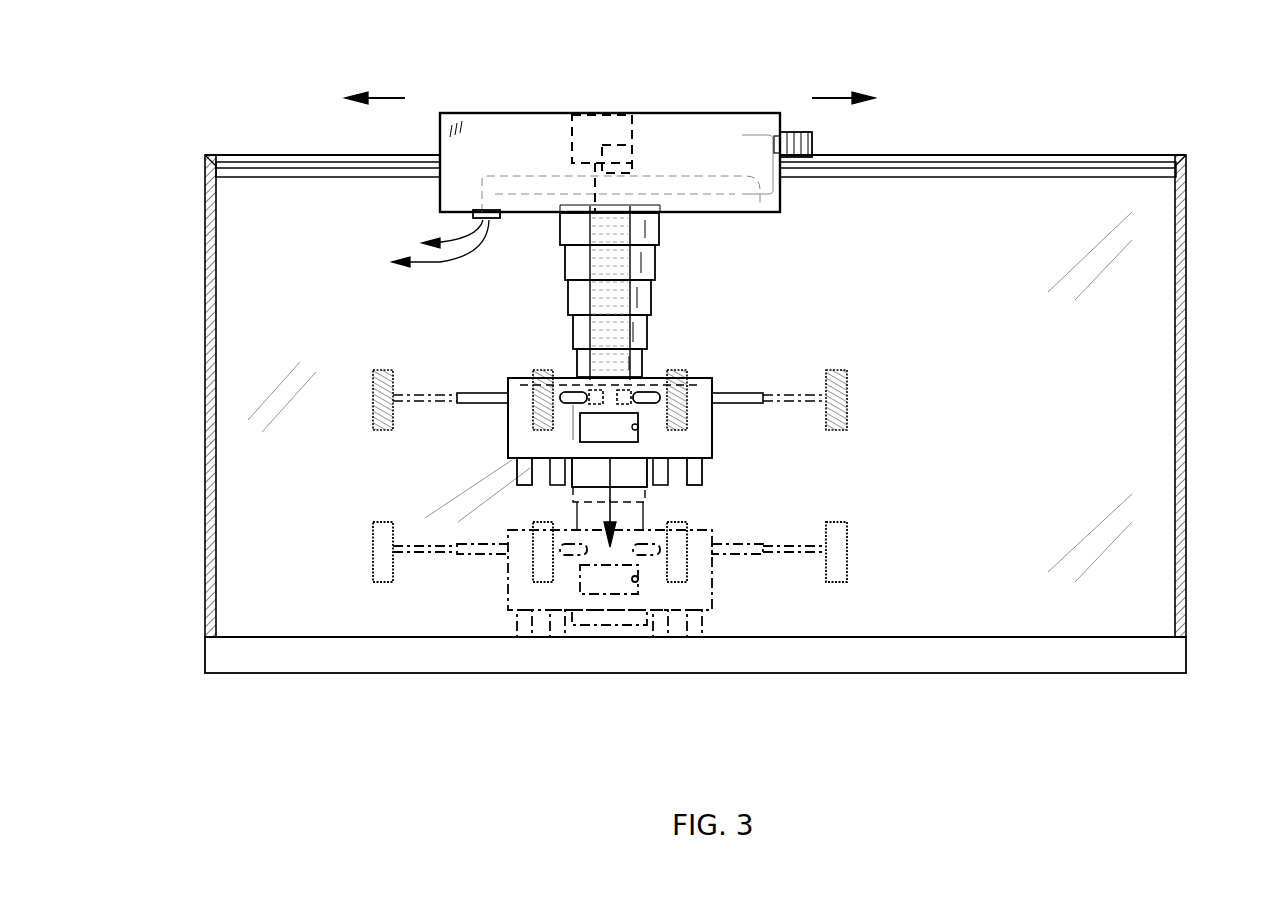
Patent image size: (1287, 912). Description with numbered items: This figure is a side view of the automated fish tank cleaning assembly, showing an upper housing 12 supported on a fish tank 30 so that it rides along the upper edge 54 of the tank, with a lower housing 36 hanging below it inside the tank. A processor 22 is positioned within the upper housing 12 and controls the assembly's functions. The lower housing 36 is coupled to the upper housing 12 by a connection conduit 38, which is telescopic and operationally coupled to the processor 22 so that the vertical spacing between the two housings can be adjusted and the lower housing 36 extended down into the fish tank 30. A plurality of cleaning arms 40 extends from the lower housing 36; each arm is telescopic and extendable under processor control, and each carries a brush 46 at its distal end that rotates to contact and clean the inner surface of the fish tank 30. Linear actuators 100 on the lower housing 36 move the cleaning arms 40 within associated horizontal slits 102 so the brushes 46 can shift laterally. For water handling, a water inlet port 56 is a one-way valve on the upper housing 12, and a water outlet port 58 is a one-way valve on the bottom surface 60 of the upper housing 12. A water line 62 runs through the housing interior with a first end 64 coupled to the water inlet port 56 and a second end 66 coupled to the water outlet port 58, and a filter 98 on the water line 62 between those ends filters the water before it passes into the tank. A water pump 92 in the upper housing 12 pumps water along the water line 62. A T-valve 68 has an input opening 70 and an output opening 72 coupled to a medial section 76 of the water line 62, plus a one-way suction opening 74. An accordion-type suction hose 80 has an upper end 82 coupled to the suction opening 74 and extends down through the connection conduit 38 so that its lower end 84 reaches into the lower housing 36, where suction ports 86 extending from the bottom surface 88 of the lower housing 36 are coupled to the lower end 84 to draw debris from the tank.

The upper housing 12 is at (455, 117).
The processor 22 is at (598, 112).
The fish tank 30 is at (1162, 283).
The lower housing 36 is at (704, 430).
The connection conduit 38 is at (654, 260).
The cleaning arms 40 is at (463, 388).
The brushes 46 is at (382, 368).
The upper edge 54 is at (987, 160).
The water inlet port 56 is at (813, 144).
The water outlet port 58 is at (476, 214).
The bottom surface 60 is at (790, 217).
The water line 62 is at (503, 173).
The first end 64 is at (773, 142).
The second end 66 is at (478, 208).
The T-valve 68 is at (650, 148).
The input opening 70 is at (660, 186).
The output opening 72 is at (577, 180).
The suction opening 74 is at (703, 216).
The medial section 76 is at (645, 175).
The suction hose 80 is at (598, 272).
The upper end 82 is at (563, 214).
The lower end 84 is at (618, 378).
The suction ports 86 is at (517, 470).
The bottom surface 88 is at (543, 468).
The water pump 92 is at (623, 150).
The filter 98 is at (476, 213).
The linear actuators 100 is at (523, 378).
The horizontal slit 102 is at (557, 400).